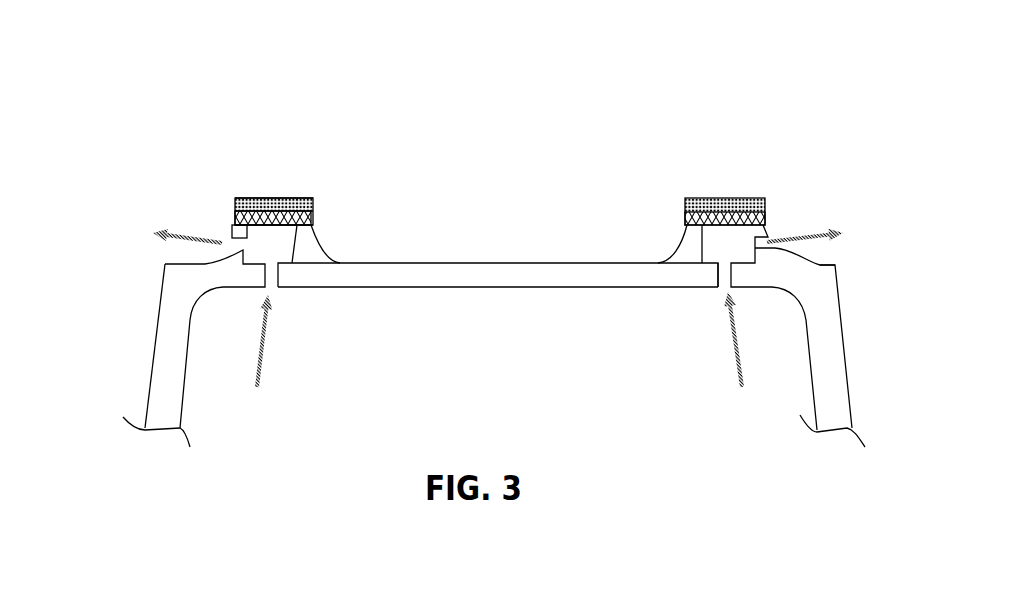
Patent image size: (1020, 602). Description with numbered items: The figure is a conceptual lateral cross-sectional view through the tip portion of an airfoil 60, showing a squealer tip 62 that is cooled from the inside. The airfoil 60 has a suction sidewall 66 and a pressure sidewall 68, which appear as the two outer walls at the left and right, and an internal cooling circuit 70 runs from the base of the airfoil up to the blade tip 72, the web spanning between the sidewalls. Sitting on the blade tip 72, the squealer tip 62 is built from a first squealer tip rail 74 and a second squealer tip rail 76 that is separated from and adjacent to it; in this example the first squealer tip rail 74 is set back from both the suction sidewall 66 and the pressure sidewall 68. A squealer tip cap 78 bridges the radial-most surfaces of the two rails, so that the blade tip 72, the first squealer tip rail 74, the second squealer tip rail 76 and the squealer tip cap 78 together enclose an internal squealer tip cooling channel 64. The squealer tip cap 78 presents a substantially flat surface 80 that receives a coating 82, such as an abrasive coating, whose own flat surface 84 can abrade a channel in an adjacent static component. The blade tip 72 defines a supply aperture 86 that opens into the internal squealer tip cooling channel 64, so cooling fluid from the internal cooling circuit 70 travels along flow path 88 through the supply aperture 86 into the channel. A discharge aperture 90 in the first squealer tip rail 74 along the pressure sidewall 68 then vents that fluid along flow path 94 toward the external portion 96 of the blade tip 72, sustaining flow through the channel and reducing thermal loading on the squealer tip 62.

The airfoil 60 is at (91, 56).
The squealer tip 62 is at (283, 158).
The internal squealer tip cooling channel 64 is at (282, 252).
The suction sidewall 66 is at (160, 335).
The pressure sidewall 68 is at (840, 335).
The internal cooling circuit 70 is at (292, 345).
The blade tip 72 is at (541, 237).
The first squealer tip rail 74 is at (231, 228).
The second squealer tip rail 76 is at (312, 224).
The squealer tip cap 78 is at (312, 215).
The substantially flat surface 80 is at (226, 203).
The coating 82 is at (314, 200).
The substantially flat surface 84 is at (240, 191).
The supply aperture 86 is at (711, 280).
The flow path 88 is at (723, 357).
The discharge aperture 90 is at (778, 229).
The flow path 94 is at (821, 218).
The external portion 96 is at (850, 258).